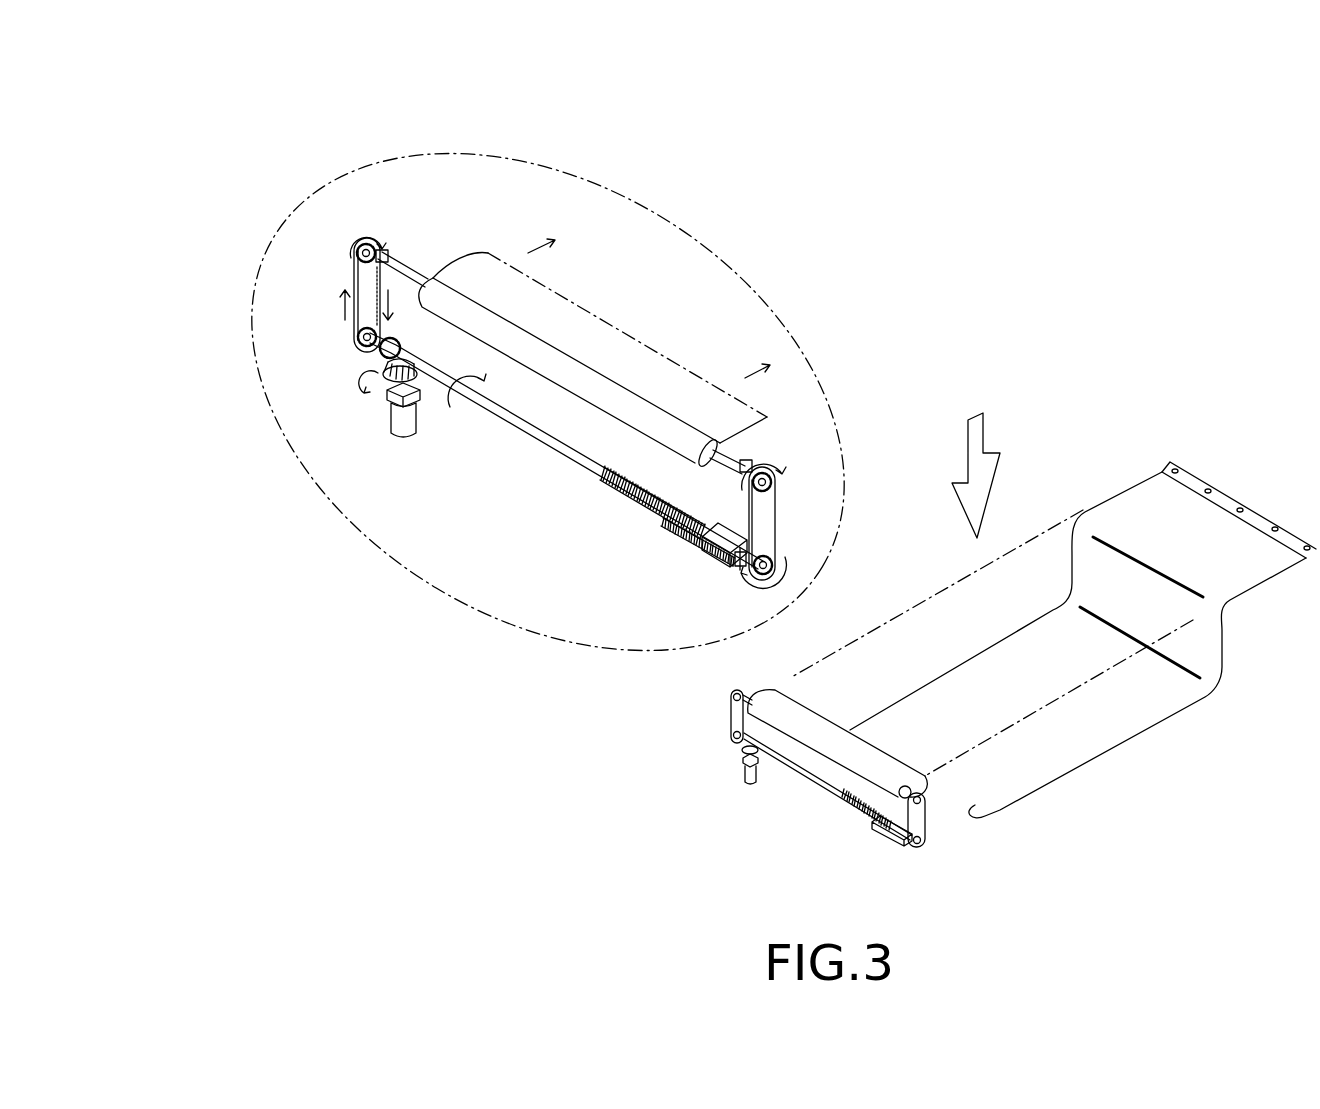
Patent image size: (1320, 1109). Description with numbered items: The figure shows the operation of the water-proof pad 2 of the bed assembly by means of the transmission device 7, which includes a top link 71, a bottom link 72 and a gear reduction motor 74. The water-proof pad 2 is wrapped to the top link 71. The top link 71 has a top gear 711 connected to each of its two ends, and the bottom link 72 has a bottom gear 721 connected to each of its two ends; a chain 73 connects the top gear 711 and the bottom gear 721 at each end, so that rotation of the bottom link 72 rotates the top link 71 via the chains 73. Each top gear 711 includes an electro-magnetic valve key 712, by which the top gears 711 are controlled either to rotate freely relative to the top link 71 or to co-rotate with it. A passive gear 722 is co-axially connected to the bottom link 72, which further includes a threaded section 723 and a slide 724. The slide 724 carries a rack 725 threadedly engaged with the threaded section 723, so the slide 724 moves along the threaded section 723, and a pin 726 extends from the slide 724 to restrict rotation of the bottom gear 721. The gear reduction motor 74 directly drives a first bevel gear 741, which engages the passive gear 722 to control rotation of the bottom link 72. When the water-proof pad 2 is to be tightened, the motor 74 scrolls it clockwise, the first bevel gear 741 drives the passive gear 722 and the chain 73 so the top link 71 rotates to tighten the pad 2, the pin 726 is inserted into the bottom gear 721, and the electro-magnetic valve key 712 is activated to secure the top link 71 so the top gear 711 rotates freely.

The water-proof pad 2 is at (1224, 468).
The transmission device 7 is at (672, 204).
The top link 71 is at (408, 270).
The top gear 711 is at (363, 237).
The electro-magnetic valve key 712 is at (378, 242).
The bottom link 72 is at (540, 437).
The bottom gear 721 is at (360, 340).
The passive gear 722 is at (377, 355).
The threaded section 723 is at (622, 490).
The slide 724 is at (715, 535).
The rack 725 is at (682, 535).
The pin 726 is at (730, 567).
The chain 73 is at (358, 290).
The gear reduction motor 74 is at (398, 428).
The first bevel gear 741 is at (390, 385).